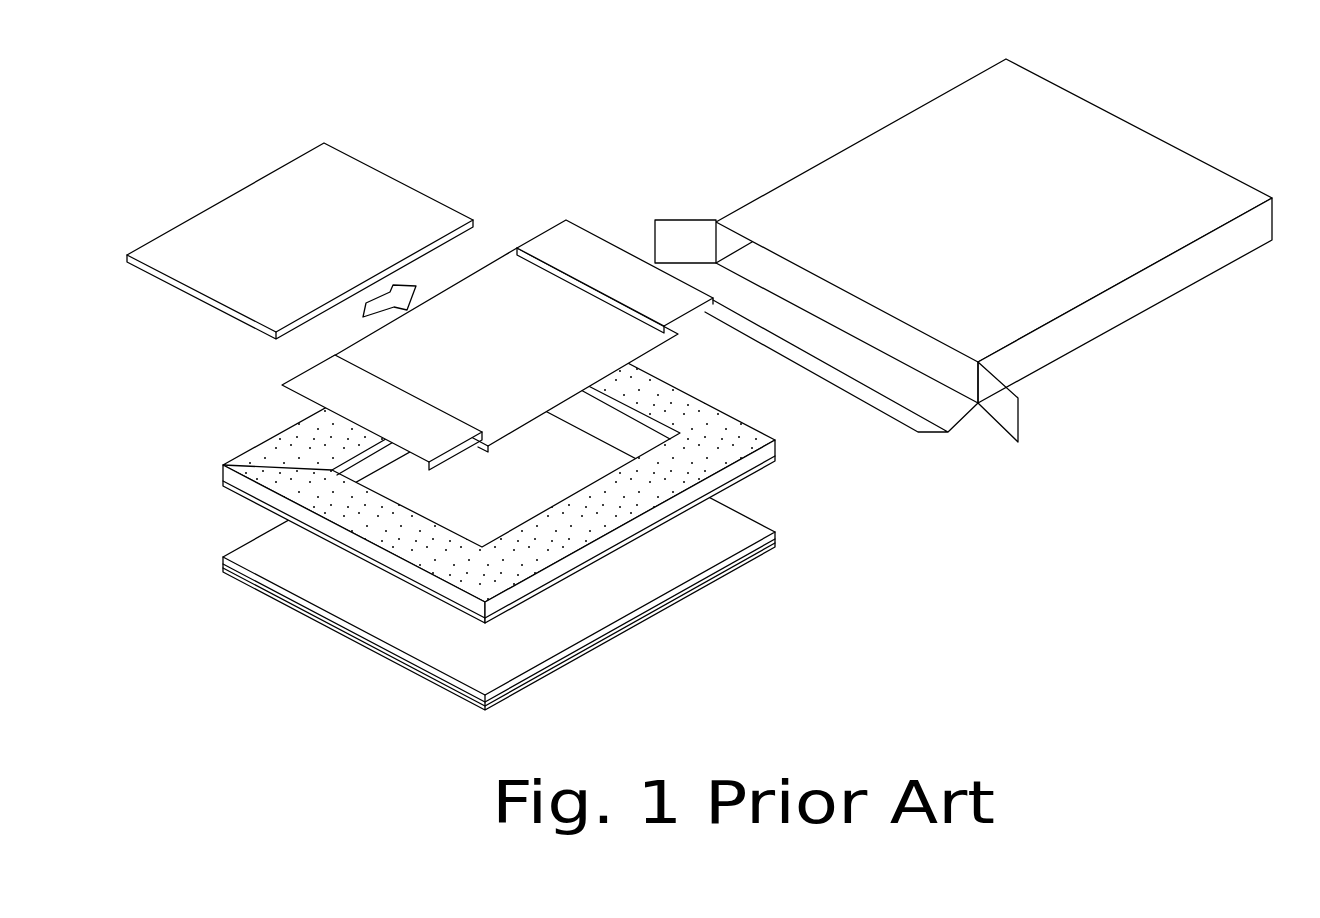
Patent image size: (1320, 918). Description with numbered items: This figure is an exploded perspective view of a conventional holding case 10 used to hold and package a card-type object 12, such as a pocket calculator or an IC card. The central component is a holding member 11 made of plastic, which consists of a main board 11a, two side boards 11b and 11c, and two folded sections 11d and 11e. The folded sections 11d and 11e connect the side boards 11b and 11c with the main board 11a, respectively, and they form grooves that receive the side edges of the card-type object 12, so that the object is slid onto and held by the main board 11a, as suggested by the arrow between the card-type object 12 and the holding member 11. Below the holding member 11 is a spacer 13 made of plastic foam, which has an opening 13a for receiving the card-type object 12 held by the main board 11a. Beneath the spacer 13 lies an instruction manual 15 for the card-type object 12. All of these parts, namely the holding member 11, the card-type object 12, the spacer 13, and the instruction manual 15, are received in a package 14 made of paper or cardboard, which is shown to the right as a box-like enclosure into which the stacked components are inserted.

The holding case 10 is at (713, 86).
The holding member 11 is at (512, 324).
The main board 11a is at (543, 400).
The side board 11b is at (445, 447).
The side board 11c is at (683, 307).
The folded section 11d is at (412, 393).
The folded section 11e is at (585, 290).
The card-type object 12 is at (262, 196).
The spacer 13 is at (534, 476).
The opening 13a is at (478, 525).
The package 14 is at (1218, 181).
The instruction manual 15 is at (658, 582).